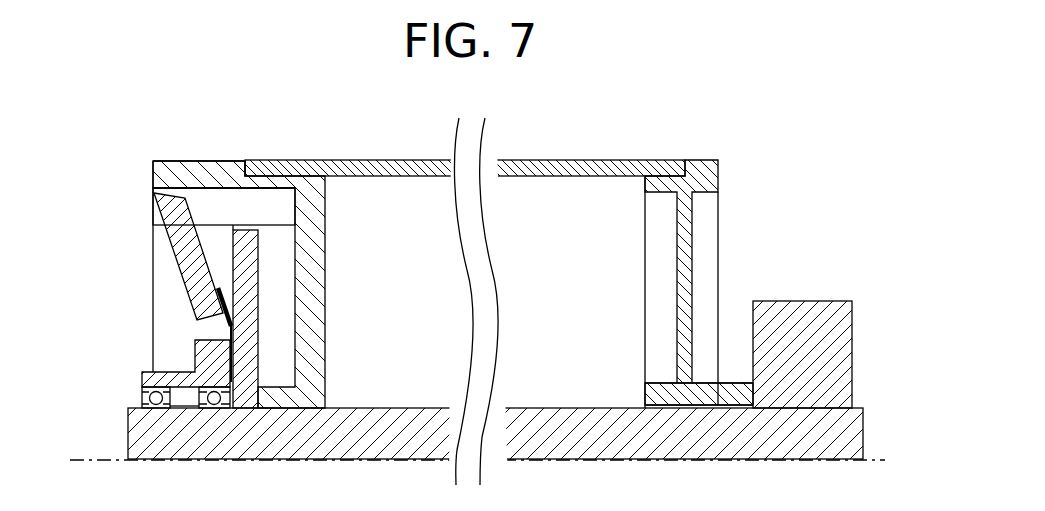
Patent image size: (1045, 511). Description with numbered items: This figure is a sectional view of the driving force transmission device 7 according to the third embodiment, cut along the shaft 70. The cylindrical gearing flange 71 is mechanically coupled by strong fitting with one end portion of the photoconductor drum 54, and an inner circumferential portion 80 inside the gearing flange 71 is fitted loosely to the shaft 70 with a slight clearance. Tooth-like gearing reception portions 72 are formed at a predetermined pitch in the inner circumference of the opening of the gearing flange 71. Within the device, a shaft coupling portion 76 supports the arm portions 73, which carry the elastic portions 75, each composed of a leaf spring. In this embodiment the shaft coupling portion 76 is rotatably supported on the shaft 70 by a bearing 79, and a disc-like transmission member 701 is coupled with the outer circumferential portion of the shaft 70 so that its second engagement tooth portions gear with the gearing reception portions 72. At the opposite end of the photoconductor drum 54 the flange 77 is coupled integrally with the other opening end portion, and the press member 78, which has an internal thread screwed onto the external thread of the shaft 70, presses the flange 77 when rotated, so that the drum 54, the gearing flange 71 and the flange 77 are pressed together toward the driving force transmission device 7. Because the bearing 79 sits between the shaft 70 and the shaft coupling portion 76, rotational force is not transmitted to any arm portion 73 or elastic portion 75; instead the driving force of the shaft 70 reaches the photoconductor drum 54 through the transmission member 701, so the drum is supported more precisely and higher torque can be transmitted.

The driving force transmission device 7 is at (82, 84).
The photoconductor drum 54 is at (578, 165).
The shaft 70 is at (557, 408).
The gearing flange 71 is at (185, 168).
The gearing reception portions 72 is at (208, 203).
The arm portions 73 is at (197, 273).
The elastic portions 75 is at (225, 330).
The shaft coupling portion 76 is at (178, 377).
The flange 77 is at (702, 172).
The press member 78 is at (800, 308).
The bearing 79 is at (139, 397).
The inner circumferential portion 80 is at (315, 370).
The transmission member 701 is at (248, 237).